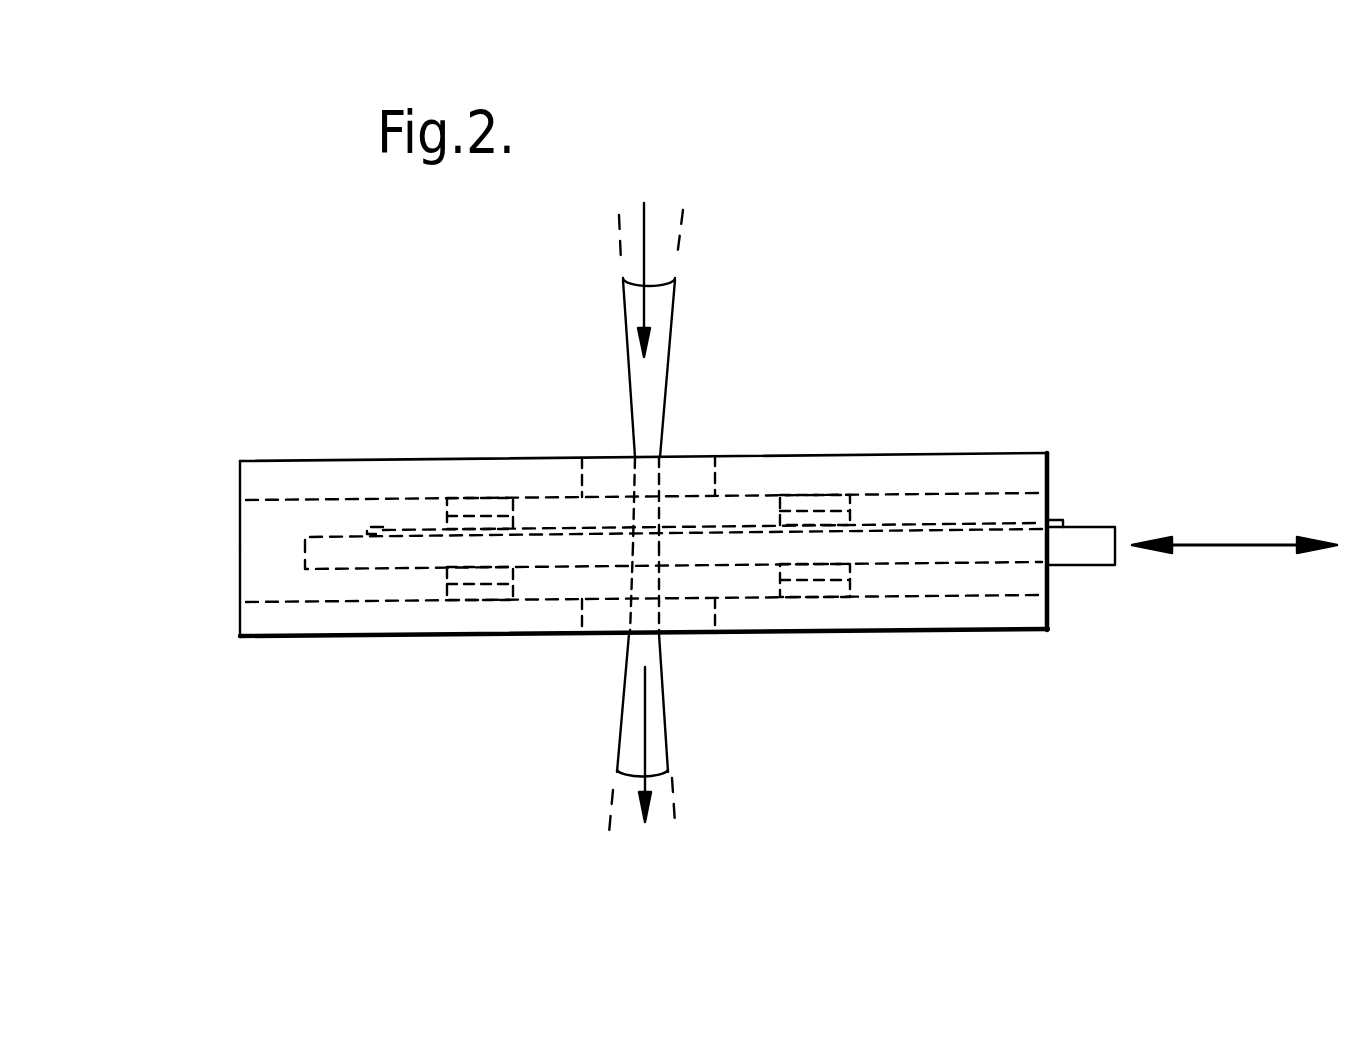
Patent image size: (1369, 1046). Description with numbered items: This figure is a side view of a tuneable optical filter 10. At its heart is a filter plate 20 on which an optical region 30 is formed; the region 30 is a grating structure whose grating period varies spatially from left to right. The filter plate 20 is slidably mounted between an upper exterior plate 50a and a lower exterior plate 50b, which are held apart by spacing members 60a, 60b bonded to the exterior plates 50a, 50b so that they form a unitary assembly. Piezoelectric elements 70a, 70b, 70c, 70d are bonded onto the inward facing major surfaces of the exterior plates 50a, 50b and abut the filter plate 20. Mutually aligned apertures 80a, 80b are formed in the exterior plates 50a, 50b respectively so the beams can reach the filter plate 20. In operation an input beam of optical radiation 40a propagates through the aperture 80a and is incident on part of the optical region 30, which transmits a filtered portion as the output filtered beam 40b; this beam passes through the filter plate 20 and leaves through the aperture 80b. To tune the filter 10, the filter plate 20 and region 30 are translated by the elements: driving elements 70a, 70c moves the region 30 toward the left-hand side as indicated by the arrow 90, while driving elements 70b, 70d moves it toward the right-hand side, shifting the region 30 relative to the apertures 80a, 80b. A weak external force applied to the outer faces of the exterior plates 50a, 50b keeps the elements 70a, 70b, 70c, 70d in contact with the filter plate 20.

The tuneable optical filter 10 is at (613, 476).
The filter plate 20 is at (1083, 550).
The optical region 30 is at (410, 528).
The input beam of optical radiation 40a is at (663, 318).
The output filtered beam of radiation 40b is at (662, 724).
The upper exterior plate 50a is at (915, 468).
The lower exterior plate 50b is at (940, 618).
The spacing member 60a is at (263, 558).
The spacing member 60b is at (168, 593).
The piezoelectric element 70a is at (477, 508).
The piezoelectric element 70b is at (807, 507).
The piezoelectric element 70c is at (475, 592).
The piezoelectric element 70d is at (815, 588).
The aperture 80a is at (682, 457).
The aperture 80b is at (608, 619).
The arrow 90 is at (1220, 545).